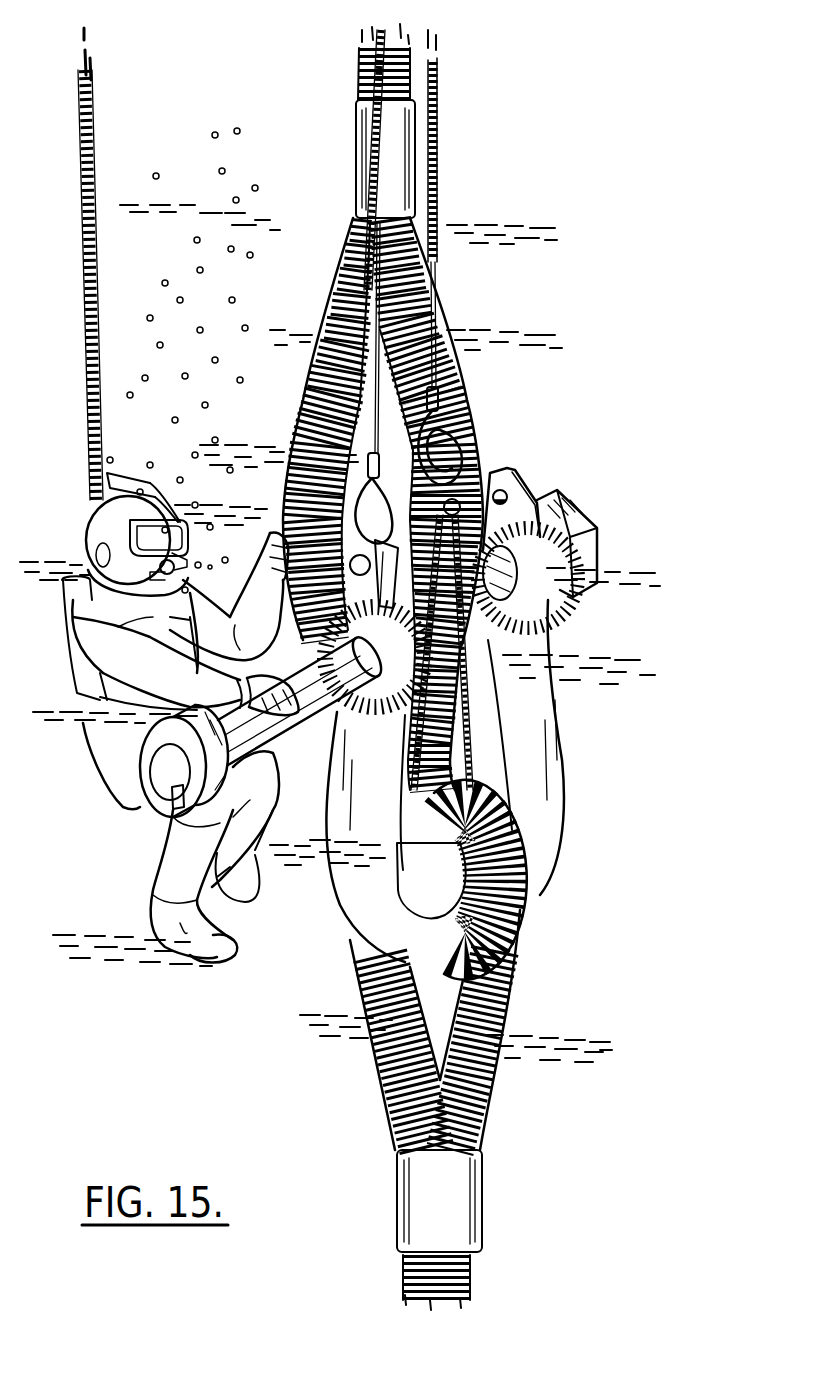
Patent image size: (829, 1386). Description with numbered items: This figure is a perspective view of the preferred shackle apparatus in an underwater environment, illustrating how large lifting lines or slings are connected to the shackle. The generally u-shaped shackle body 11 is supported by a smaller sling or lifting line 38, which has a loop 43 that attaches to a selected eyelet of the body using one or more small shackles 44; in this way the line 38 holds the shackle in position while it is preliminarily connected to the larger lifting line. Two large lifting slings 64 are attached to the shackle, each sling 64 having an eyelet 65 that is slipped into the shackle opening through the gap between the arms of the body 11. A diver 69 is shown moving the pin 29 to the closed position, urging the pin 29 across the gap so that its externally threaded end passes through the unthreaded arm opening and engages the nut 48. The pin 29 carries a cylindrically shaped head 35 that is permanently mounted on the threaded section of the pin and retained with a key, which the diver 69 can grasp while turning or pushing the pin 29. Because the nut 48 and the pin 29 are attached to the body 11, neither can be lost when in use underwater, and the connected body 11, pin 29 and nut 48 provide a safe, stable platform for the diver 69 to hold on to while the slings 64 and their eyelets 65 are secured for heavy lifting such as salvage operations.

The sling 64 is at (398, 56).
The smaller sling 38 is at (375, 158).
The eyelet 65 is at (455, 400).
The loop 43 is at (384, 493).
The small shackle 44 is at (353, 530).
The nut 48 is at (570, 522).
The diver 69 is at (92, 638).
The pin 29 is at (322, 730).
The head 35 is at (148, 782).
The shackle body 11 is at (555, 800).